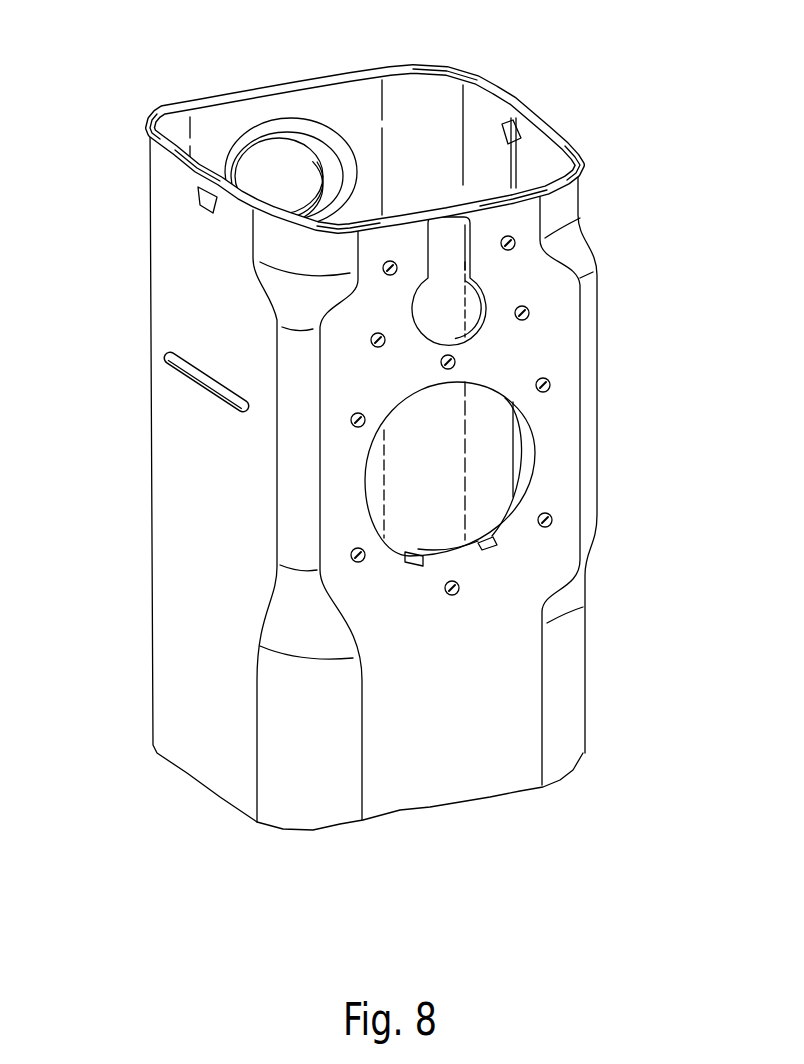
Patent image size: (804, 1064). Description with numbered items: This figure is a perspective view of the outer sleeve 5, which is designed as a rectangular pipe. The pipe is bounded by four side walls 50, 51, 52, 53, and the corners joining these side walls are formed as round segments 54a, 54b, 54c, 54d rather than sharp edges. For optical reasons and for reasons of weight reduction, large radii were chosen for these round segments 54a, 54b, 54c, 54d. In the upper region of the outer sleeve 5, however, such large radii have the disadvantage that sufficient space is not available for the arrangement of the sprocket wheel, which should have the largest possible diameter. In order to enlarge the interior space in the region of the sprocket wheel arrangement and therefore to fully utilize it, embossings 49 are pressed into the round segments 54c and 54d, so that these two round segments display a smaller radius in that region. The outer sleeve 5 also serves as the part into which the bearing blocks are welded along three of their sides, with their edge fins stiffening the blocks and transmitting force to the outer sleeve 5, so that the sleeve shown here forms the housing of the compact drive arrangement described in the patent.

The outer sleeve 5 is at (612, 705).
The embossings 49 is at (612, 342).
The side wall 50 is at (279, 85).
The side wall 51 is at (524, 202).
The side wall 52 is at (186, 175).
The side wall 53 is at (552, 125).
The round segment 54a is at (141, 126).
The round segment 54b is at (452, 69).
The round segment 54c is at (598, 167).
The round segment 54d is at (287, 232).